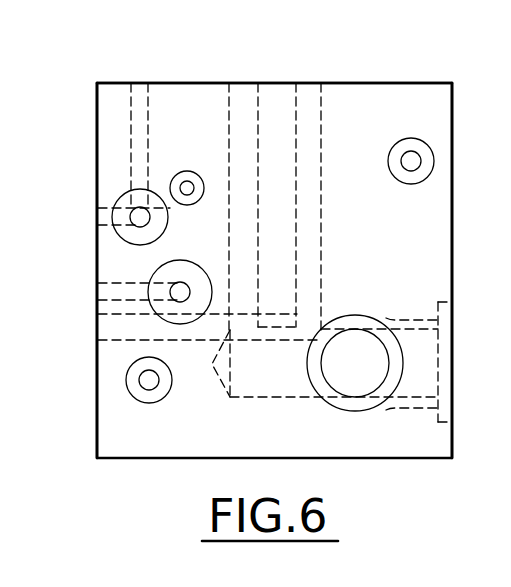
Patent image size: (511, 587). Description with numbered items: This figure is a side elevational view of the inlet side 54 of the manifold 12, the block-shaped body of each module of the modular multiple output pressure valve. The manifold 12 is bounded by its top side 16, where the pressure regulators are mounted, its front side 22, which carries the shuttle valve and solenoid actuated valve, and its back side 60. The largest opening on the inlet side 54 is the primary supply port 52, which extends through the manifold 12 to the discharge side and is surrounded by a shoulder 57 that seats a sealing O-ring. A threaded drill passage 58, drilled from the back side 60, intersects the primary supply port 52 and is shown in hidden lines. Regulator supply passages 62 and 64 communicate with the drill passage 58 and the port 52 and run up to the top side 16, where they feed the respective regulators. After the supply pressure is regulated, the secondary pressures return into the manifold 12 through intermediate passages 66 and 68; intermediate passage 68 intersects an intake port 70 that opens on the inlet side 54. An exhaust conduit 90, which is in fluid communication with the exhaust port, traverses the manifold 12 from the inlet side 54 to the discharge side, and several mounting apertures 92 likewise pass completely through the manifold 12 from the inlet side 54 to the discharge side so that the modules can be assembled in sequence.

The manifold 12 is at (438, 68).
The top side 16 is at (383, 82).
The front side 22 is at (97, 130).
The primary supply port 52 is at (343, 333).
The inlet side 54 is at (165, 92).
The shoulder 57 is at (348, 402).
The threaded drill passage 58 is at (408, 320).
The back side 60 is at (455, 148).
The regulator supply passage 62 is at (378, 196).
The regulator supply passage 64 is at (250, 88).
The intermediate passage 66 is at (130, 342).
The intermediate passage 68 is at (134, 82).
The intake port 70 is at (150, 225).
The exhaust conduit 90 is at (185, 300).
The mounting apertures 92 is at (188, 181).